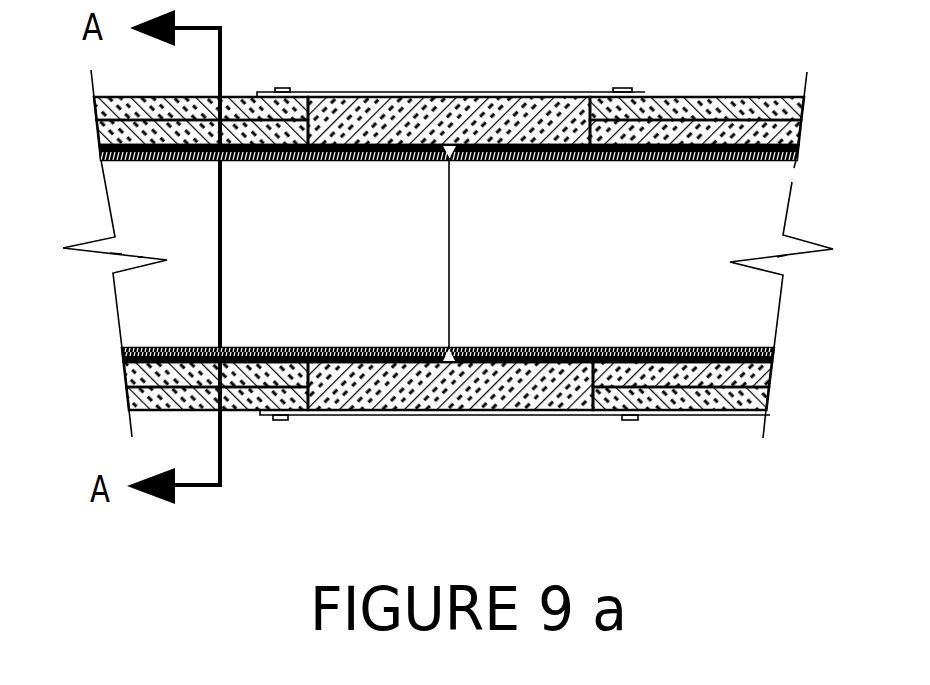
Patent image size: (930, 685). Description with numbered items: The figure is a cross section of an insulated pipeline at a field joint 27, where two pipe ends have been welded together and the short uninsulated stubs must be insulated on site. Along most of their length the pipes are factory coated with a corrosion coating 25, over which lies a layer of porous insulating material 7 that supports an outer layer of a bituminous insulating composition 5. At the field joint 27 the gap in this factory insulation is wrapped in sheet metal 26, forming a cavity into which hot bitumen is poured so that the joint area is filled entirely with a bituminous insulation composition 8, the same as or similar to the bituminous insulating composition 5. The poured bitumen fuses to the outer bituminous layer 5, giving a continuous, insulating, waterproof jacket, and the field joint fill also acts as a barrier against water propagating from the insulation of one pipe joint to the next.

The bituminous insulating composition 5 is at (453, 445).
The porous insulating material 7 is at (454, 484).
The bituminous insulation composition 8 is at (515, 459).
The corrosion coating 25 is at (510, 90).
The sheet metal 26 is at (450, 440).
The field joint 27 is at (363, 326).